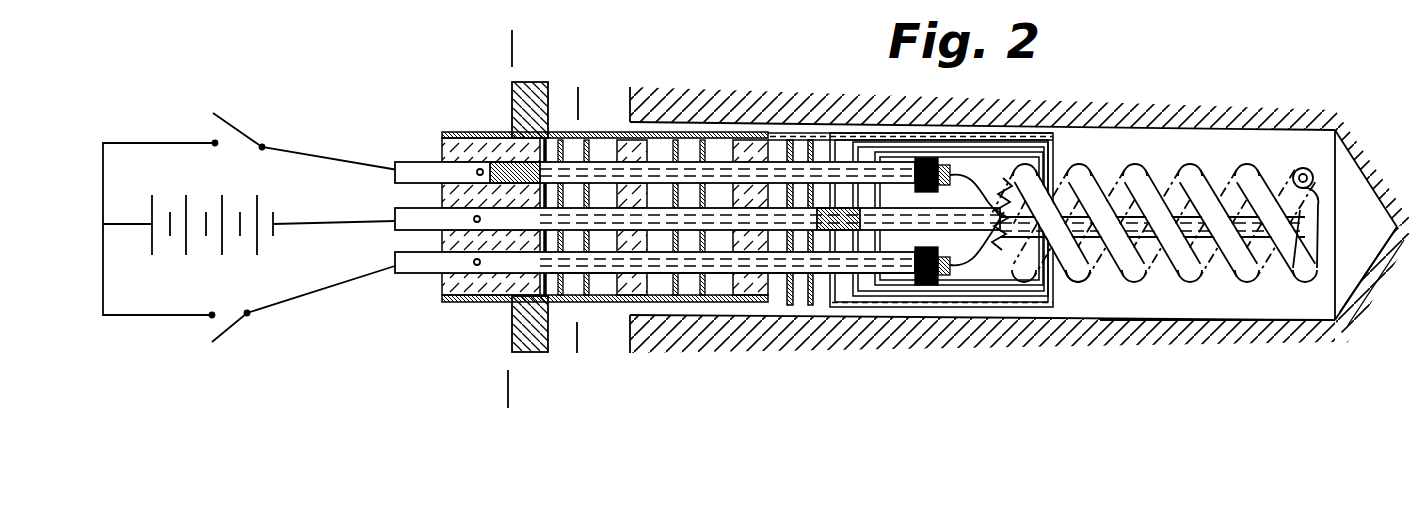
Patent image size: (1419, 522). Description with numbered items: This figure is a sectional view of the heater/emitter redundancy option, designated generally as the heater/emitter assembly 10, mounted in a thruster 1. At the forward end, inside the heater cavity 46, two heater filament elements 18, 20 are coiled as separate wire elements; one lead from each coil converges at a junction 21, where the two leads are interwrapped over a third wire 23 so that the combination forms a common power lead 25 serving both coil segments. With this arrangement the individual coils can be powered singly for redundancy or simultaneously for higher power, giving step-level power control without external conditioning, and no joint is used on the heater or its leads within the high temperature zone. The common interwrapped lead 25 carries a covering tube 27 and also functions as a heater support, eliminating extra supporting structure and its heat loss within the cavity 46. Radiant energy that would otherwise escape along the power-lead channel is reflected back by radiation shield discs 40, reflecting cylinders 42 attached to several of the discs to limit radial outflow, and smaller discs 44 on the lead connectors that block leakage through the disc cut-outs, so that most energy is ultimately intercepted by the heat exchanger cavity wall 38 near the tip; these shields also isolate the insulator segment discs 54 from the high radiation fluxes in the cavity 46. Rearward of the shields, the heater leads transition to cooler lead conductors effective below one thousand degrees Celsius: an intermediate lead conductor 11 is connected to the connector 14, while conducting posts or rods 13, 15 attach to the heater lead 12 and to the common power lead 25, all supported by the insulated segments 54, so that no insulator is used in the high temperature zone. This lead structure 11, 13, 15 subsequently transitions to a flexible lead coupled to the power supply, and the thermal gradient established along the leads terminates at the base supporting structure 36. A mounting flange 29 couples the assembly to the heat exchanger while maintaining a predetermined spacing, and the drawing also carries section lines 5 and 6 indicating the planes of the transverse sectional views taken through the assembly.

The thruster 1 is at (1138, 112).
The section line 5 is at (518, 40).
The section line 6 is at (612, 100).
The heater/emitter assembly 10 is at (428, 314).
The intermediate lead conductor 11 is at (402, 163).
The conductor 12 is at (718, 275).
The conducting post 13 is at (395, 210).
The conductor 14 is at (700, 138).
The conducting rod 15 is at (395, 255).
The heater filament element 18 is at (1080, 280).
The heater filament element 20 is at (1080, 180).
The junction 21 is at (1347, 218).
The third wire 23 is at (895, 225).
The common power lead 25 is at (977, 251).
The covering tube 27 is at (976, 189).
The mounting flange 29 is at (512, 333).
The base supporting structure 36 is at (648, 136).
The heat exchanger cavity wall 38 is at (1352, 302).
The radiation shield discs 40 is at (832, 140).
The reflecting cylinders 42 is at (856, 142).
The smaller discs 44 is at (935, 165).
The heater cavity 46 is at (1218, 320).
The insulator segment discs 54 is at (445, 285).